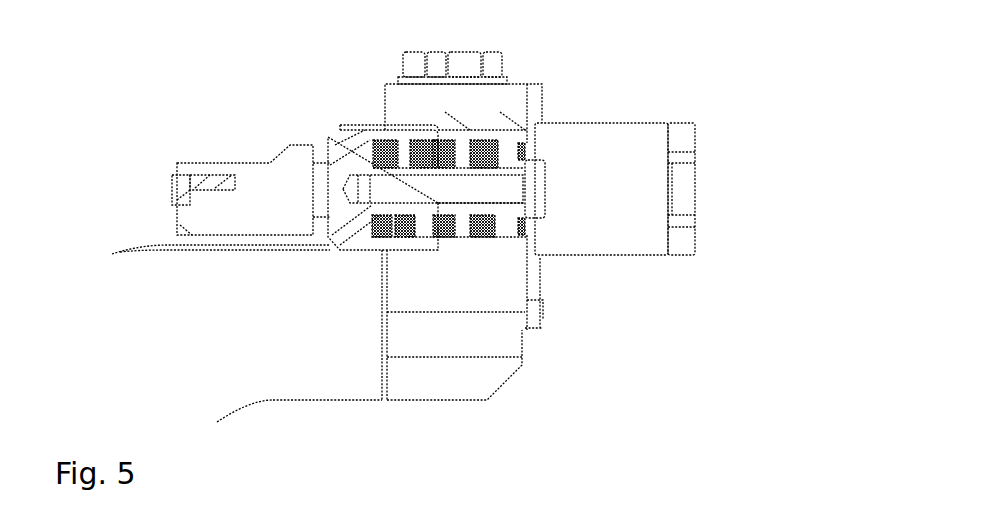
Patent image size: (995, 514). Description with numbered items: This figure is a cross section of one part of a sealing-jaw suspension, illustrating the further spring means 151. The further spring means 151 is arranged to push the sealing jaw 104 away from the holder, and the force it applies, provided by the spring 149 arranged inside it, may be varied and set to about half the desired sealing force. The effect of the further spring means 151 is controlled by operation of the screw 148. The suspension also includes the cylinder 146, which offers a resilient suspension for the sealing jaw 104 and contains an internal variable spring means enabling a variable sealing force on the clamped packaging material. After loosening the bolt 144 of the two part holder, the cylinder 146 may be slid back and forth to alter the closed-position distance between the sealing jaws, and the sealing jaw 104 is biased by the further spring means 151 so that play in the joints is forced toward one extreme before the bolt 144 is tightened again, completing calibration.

The sealing jaw 104 is at (253, 197).
The bolt 144 is at (473, 57).
The cylinder 146 is at (611, 126).
The screw 148 is at (527, 212).
The spring 149 is at (400, 228).
The further spring means 151 is at (345, 148).